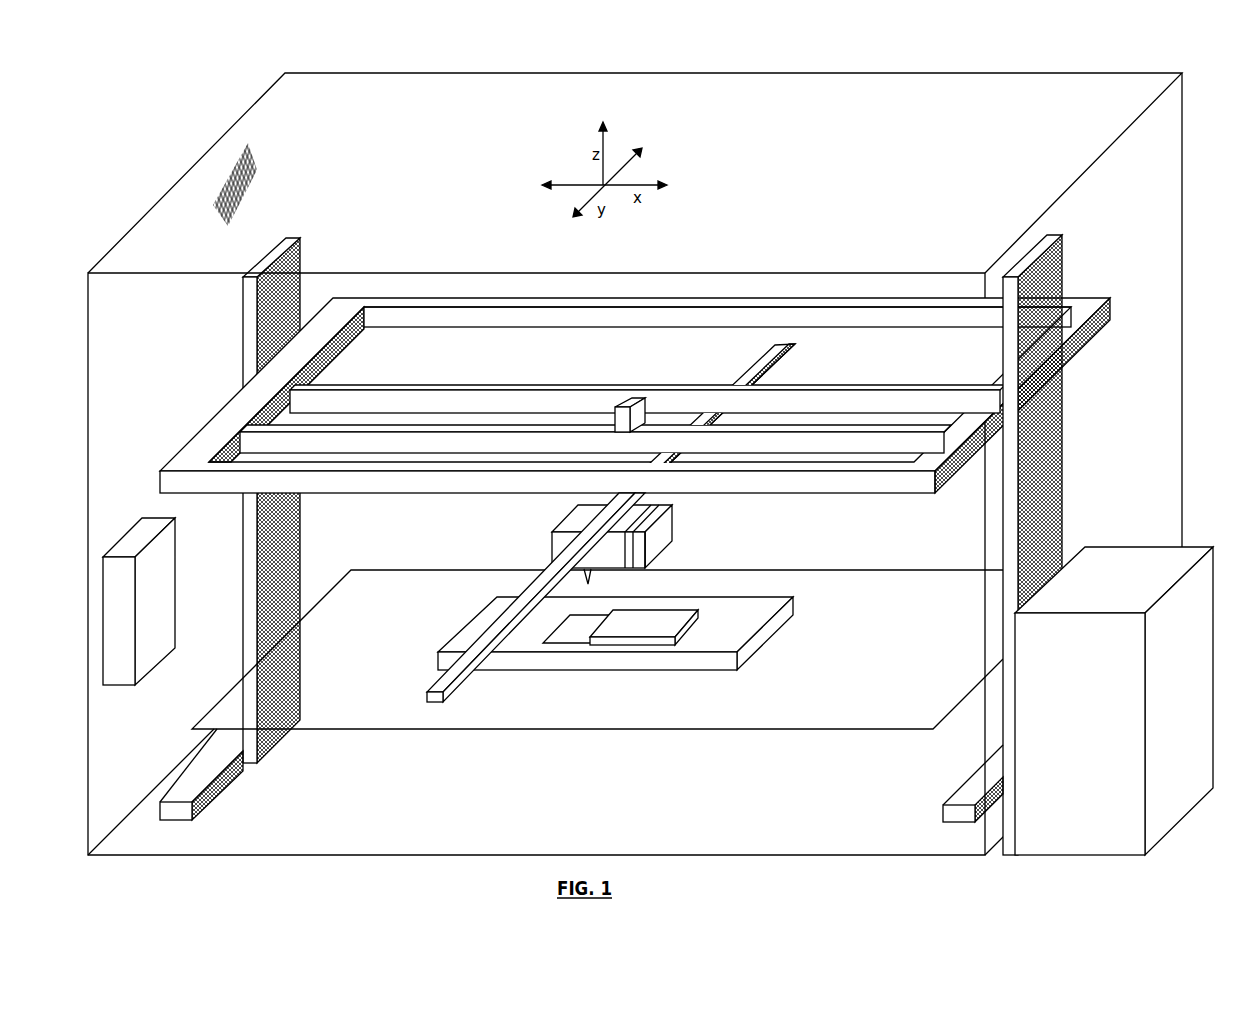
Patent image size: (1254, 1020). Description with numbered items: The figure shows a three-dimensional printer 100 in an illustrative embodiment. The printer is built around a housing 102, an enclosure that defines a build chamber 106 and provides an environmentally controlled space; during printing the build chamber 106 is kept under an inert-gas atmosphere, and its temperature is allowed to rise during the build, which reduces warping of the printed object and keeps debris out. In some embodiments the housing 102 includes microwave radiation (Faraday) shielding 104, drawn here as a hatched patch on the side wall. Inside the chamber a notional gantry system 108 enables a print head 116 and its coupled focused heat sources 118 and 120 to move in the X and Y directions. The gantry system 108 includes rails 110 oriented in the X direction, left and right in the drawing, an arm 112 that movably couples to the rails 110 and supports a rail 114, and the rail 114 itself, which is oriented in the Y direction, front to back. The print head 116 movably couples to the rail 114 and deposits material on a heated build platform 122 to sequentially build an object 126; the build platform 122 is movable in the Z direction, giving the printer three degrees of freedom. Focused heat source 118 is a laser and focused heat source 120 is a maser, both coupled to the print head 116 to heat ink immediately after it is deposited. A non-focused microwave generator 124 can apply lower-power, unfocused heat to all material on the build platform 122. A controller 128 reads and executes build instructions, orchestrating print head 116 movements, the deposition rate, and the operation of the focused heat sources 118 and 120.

The 3D printer 100 is at (152, 108).
The housing 102 is at (163, 192).
The microwave radiation shielding 104 is at (254, 166).
The build chamber 106 is at (402, 197).
The gantry system 108 is at (216, 388).
The rail 110 is at (522, 440).
The arm 112 is at (614, 405).
The rail 114 is at (532, 586).
The print head 116 is at (556, 551).
The focused heat source 118 is at (676, 507).
The focused heat source 120 is at (655, 540).
The build platform 122 is at (364, 668).
The microwave generator 124 is at (168, 618).
The object 126 is at (790, 640).
The controller 128 is at (1097, 723).